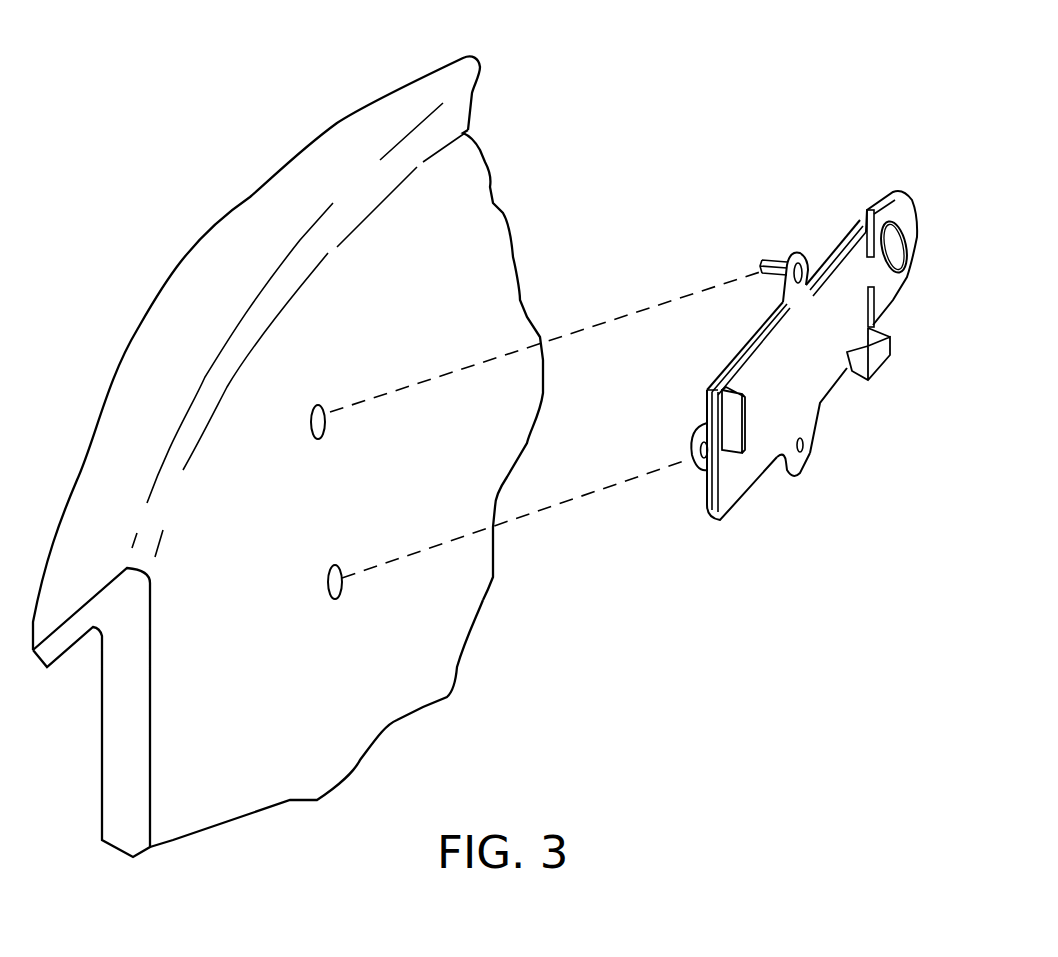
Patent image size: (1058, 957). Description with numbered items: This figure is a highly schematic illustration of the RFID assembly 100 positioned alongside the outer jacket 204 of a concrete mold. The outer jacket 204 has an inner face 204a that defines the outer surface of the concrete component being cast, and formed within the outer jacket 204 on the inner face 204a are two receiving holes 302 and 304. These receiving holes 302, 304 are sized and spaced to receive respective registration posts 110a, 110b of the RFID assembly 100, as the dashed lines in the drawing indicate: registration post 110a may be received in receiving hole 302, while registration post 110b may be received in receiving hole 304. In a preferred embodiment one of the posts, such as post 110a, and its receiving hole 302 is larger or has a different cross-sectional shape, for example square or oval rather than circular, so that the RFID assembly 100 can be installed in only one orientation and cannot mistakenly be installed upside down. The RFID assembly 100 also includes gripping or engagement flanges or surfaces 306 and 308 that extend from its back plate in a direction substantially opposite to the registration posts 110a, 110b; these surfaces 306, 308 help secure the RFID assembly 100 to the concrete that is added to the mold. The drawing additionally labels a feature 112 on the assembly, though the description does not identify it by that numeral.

The RFID assembly 100 is at (698, 520).
The registration post 110a is at (766, 258).
The registration post 110b is at (778, 462).
The mounting ear with hole 112 is at (916, 192).
The outer jacket 204 is at (330, 117).
The inner face 204a is at (465, 173).
The receiving hole 302 is at (325, 424).
The receiving hole 304 is at (340, 568).
The gripping or engagement surface 306 is at (725, 412).
The gripping or engagement surface 308 is at (880, 370).